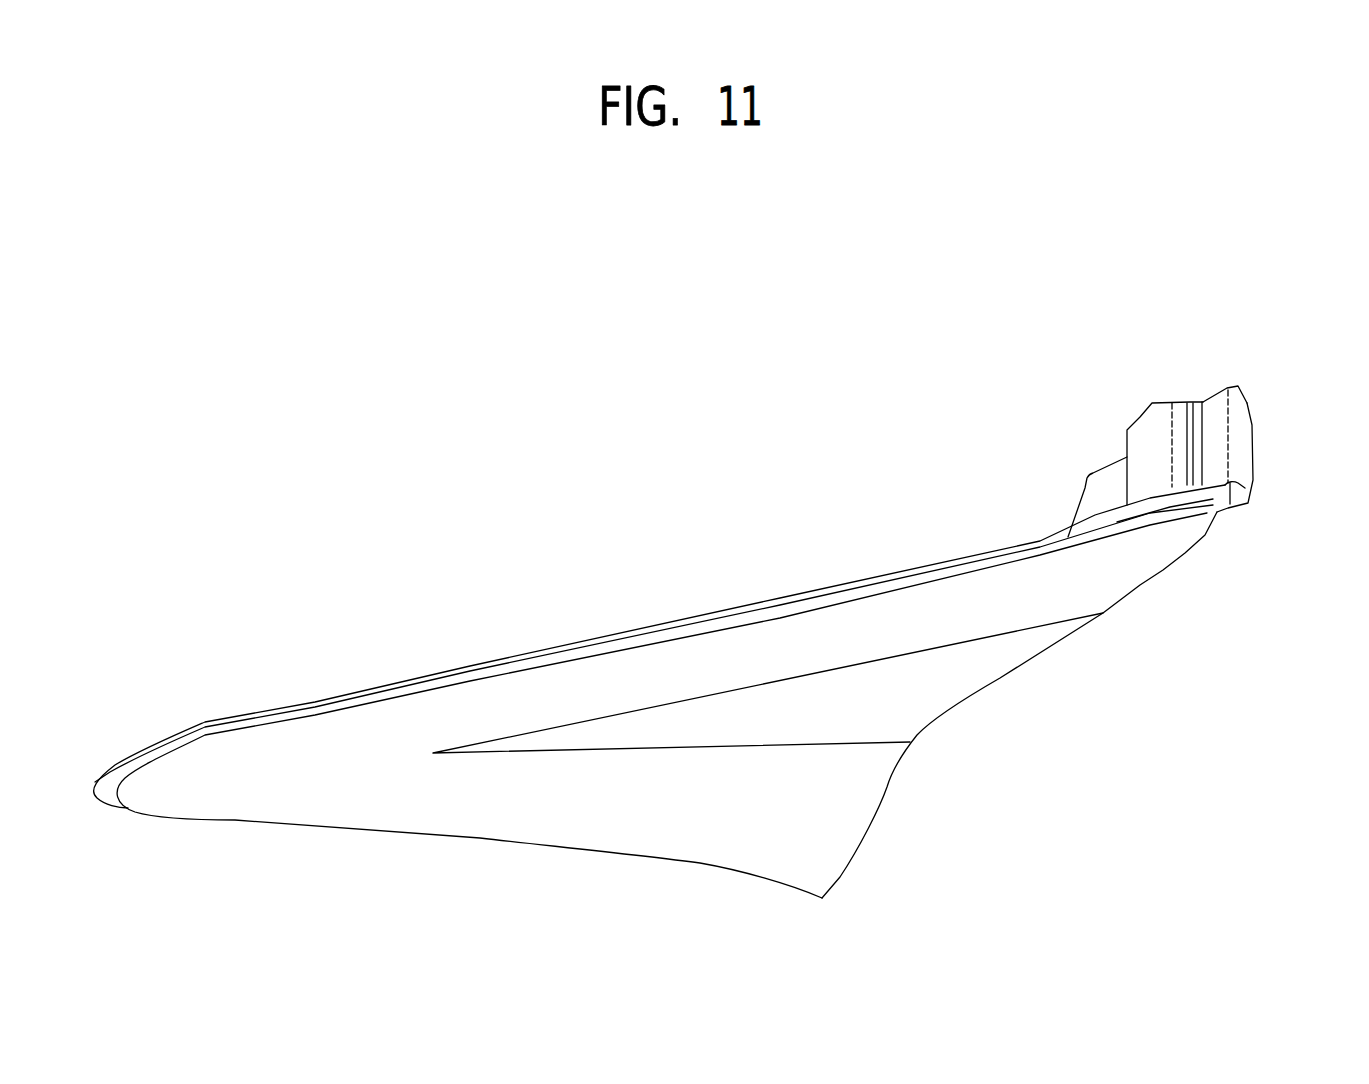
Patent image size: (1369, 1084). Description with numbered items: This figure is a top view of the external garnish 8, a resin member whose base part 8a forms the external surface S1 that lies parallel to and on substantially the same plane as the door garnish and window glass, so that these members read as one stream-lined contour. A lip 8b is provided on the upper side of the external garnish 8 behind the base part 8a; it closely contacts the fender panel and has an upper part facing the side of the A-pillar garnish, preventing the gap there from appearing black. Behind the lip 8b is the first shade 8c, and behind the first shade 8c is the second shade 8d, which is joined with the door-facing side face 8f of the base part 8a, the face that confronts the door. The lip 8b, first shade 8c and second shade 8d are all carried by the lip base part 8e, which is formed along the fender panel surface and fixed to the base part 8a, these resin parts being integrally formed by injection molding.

The external garnish 8 is at (585, 395).
The base part 8a is at (610, 692).
The lip 8b is at (772, 610).
The first shade 8c is at (1113, 520).
The second shade 8d is at (1150, 422).
The lip base part 8e is at (1217, 405).
The door-facing side face 8f is at (1257, 432).
The external surface S1 is at (838, 728).